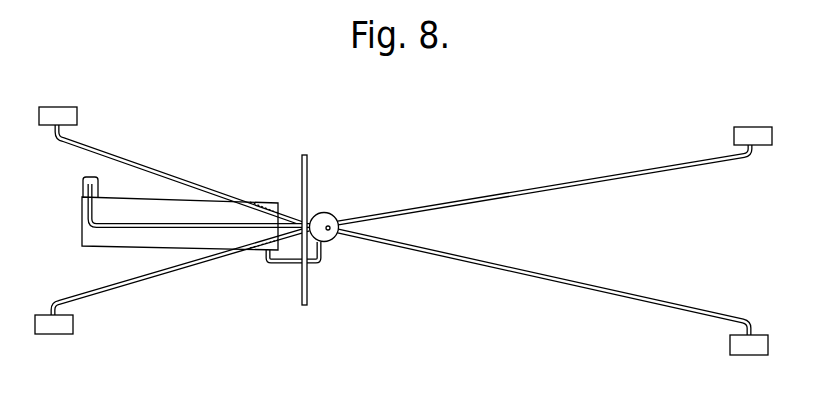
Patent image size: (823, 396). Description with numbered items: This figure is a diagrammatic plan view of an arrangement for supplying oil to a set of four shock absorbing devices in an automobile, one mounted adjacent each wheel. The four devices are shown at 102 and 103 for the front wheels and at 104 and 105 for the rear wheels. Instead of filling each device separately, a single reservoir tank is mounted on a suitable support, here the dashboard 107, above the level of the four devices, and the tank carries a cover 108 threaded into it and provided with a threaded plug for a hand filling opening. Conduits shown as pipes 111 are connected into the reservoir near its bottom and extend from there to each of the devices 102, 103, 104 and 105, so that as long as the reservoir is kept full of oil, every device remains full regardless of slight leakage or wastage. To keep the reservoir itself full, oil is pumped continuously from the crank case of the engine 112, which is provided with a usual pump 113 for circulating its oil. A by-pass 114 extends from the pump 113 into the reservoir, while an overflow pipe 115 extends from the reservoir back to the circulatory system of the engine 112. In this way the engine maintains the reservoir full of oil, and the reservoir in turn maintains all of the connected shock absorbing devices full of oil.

The shock absorbing device 102 is at (65, 107).
The shock absorbing device 103 is at (65, 335).
The shock absorbing device 104 is at (753, 132).
The shock absorbing device 105 is at (758, 352).
The dashboard 107 is at (307, 288).
The cover 108 is at (330, 214).
The pipes 111 is at (165, 168).
The engine 112 is at (123, 243).
The pump 113 is at (85, 177).
The by-pass 114 is at (224, 228).
The overflow pipe 115 is at (282, 262).